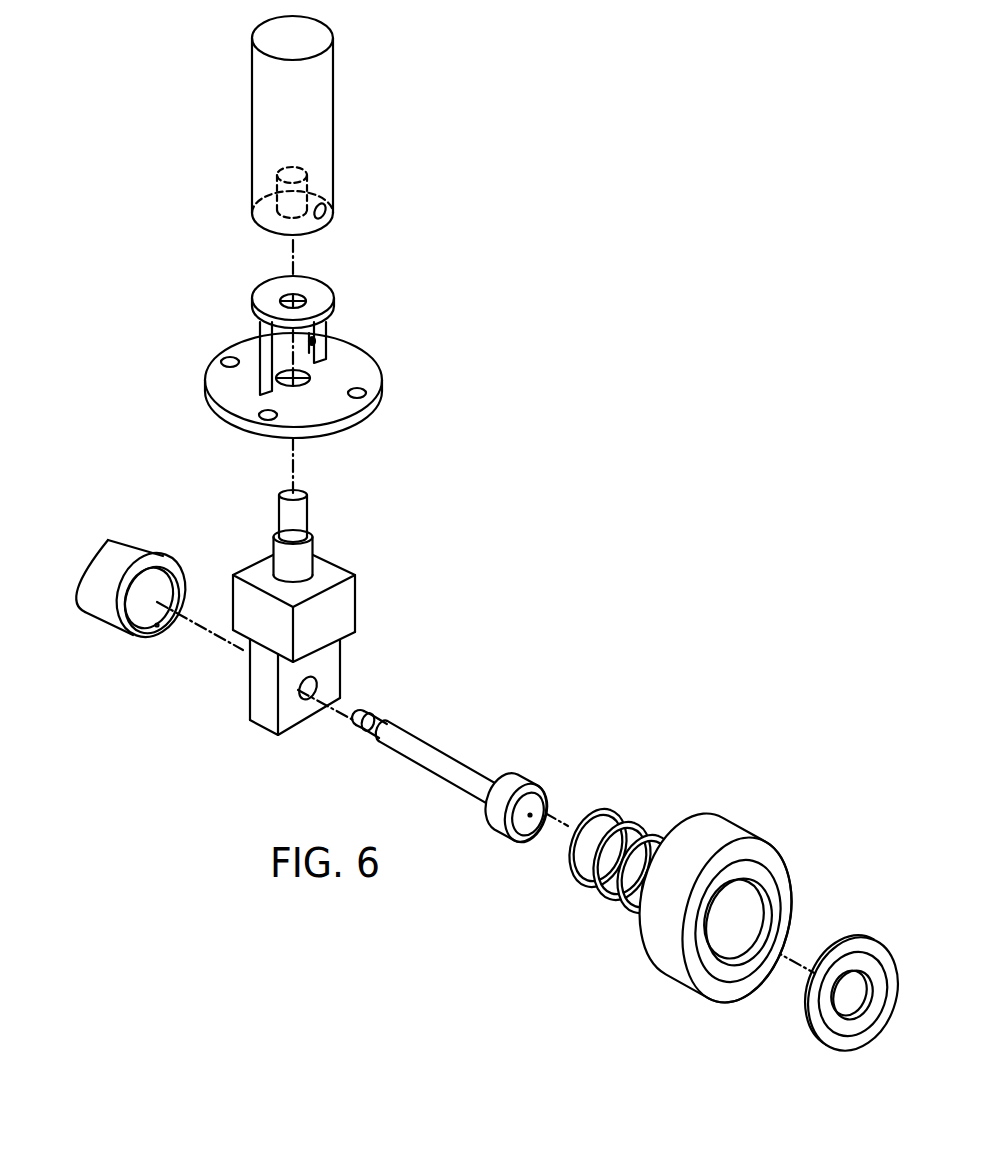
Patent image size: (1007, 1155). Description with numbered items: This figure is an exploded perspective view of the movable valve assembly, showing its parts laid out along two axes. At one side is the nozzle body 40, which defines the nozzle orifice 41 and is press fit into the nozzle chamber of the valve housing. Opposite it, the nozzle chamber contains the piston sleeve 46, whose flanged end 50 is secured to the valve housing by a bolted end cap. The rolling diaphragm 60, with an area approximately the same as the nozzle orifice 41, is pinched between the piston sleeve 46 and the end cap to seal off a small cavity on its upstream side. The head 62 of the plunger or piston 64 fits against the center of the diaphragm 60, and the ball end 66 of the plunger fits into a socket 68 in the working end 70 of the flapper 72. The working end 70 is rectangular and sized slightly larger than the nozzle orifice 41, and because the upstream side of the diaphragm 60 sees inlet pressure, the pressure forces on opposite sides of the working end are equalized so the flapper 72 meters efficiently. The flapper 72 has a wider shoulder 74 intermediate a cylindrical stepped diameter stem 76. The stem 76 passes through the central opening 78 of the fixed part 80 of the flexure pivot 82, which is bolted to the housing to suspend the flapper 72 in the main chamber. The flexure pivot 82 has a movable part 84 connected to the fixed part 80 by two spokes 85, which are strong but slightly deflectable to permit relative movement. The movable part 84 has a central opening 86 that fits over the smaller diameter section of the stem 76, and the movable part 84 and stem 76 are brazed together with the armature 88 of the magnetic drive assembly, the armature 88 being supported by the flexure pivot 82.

The nozzle body 40 is at (127, 543).
The nozzle orifice 41 is at (157, 627).
The piston sleeve 46 is at (640, 940).
The flanged end 50 is at (668, 977).
The rolling diaphragm 60 is at (871, 942).
The head 62 is at (503, 828).
The plunger or piston 64 is at (451, 780).
The ball end 66 is at (372, 712).
The socket 68 is at (305, 693).
The working end 70 is at (330, 656).
The flapper 72 is at (330, 628).
The shoulder 74 is at (340, 603).
The stem 76 is at (282, 560).
The central opening 78 is at (302, 386).
The fixed part 80 is at (338, 432).
The flexure pivot 82 is at (315, 364).
The movable part 84 is at (322, 294).
The spokes 85 is at (267, 370).
The central opening 86 is at (283, 300).
The armature 88 is at (325, 117).